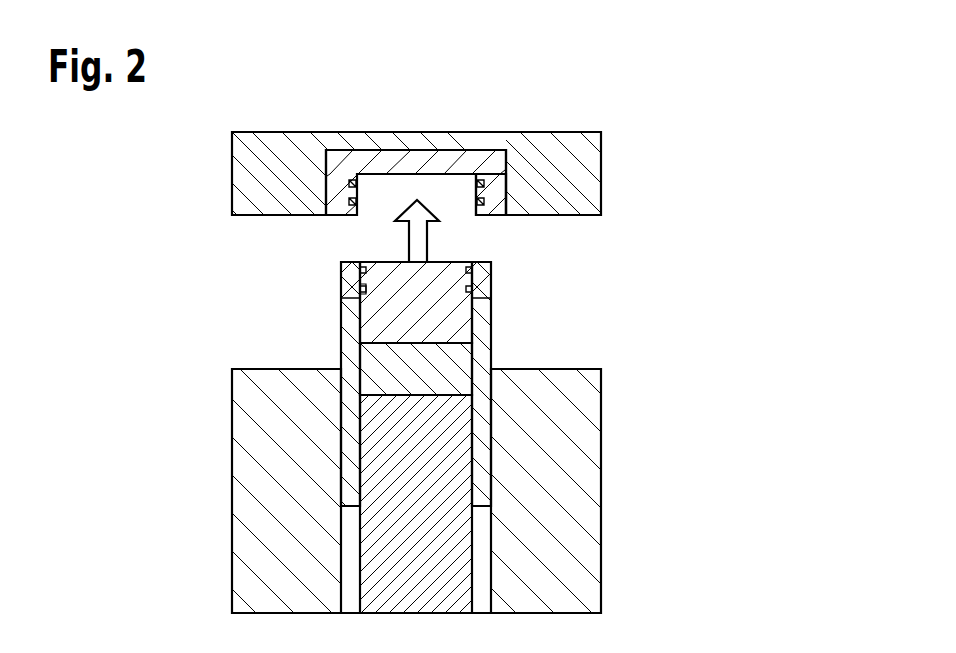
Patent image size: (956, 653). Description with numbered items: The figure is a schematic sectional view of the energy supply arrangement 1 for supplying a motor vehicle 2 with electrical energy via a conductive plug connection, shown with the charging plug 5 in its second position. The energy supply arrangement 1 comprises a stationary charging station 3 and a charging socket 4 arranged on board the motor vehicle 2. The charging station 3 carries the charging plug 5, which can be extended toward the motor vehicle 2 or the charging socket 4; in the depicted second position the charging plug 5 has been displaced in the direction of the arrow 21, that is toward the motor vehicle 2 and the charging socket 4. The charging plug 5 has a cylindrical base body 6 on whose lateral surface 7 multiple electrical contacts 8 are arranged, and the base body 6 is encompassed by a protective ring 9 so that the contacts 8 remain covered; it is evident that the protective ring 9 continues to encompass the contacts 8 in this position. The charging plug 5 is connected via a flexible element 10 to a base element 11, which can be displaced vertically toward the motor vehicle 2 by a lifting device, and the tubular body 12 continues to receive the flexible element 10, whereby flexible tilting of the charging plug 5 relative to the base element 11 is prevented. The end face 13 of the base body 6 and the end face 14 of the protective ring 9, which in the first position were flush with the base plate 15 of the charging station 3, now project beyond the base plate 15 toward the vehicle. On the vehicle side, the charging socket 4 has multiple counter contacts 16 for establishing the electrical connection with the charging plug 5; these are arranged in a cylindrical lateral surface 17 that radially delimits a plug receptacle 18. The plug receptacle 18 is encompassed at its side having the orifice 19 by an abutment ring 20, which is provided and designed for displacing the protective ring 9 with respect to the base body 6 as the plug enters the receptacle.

The energy supply arrangement 1 is at (610, 113).
The motor vehicle 2 is at (623, 148).
The charging station 3 is at (596, 341).
The charging socket 4 is at (357, 149).
The charging plug 5 is at (473, 278).
The cylindrical base body 6 is at (367, 328).
The lateral surface 7 is at (360, 288).
The electrical contacts 8 is at (360, 272).
The protective ring 9 is at (483, 319).
The flexible element 10 is at (455, 357).
The base element 11 is at (463, 450).
The tubular body 12 is at (483, 415).
The end face of the base body 13 is at (373, 258).
The end face of the protective ring 14 is at (352, 262).
The base plate 15 is at (253, 367).
The counter contacts 16 is at (349, 183).
The cylindrical lateral surface 17 is at (482, 203).
The plug receptacle 18 is at (432, 193).
The orifice 19 is at (390, 215).
The abutment ring 20 is at (495, 197).
The arrow 21 is at (418, 237).